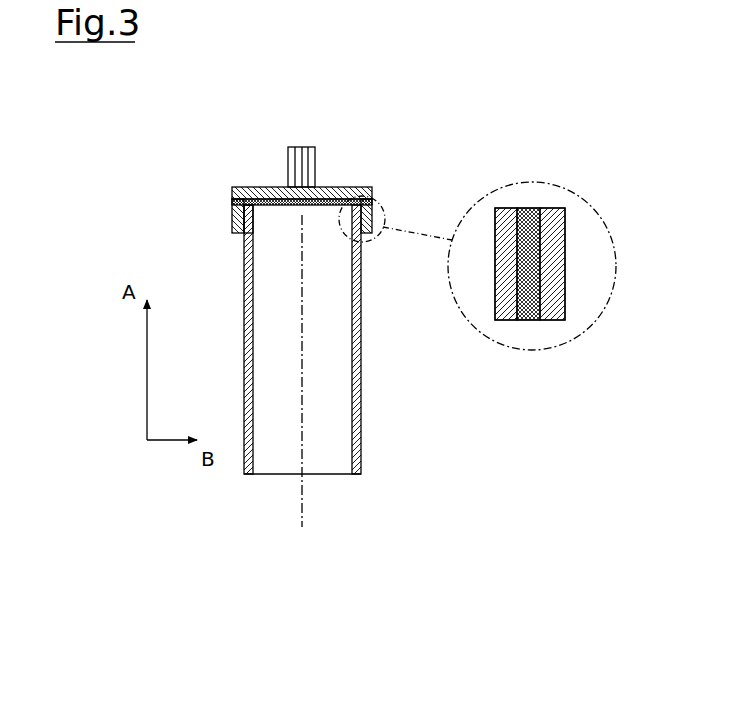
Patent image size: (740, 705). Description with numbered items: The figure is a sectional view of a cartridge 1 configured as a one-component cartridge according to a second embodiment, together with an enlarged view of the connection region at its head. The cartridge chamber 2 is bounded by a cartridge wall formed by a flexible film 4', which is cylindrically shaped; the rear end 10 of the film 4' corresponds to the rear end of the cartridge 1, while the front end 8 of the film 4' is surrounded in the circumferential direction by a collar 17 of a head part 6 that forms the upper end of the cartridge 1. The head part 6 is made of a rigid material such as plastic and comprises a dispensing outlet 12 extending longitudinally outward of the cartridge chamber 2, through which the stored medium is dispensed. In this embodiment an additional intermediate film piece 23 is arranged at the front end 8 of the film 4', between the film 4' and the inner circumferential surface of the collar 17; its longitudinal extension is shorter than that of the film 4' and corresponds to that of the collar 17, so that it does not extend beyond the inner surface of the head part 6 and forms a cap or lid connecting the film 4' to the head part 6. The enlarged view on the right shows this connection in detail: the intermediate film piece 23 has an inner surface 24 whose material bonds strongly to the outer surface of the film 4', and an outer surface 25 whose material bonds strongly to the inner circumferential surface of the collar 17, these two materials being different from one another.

The cartridge 1 is at (240, 167).
The cartridge chamber 2 is at (270, 288).
The flexible film 4' is at (352, 339).
The head part 6 is at (328, 187).
The front end 8 is at (240, 212).
The rear end 10 is at (295, 480).
The dispensing outlet 12 is at (300, 149).
The collar 17 is at (232, 203).
The intermediate film piece 23 is at (343, 201).
The inner surface 24 is at (515, 208).
The outer surface 25 is at (542, 208).